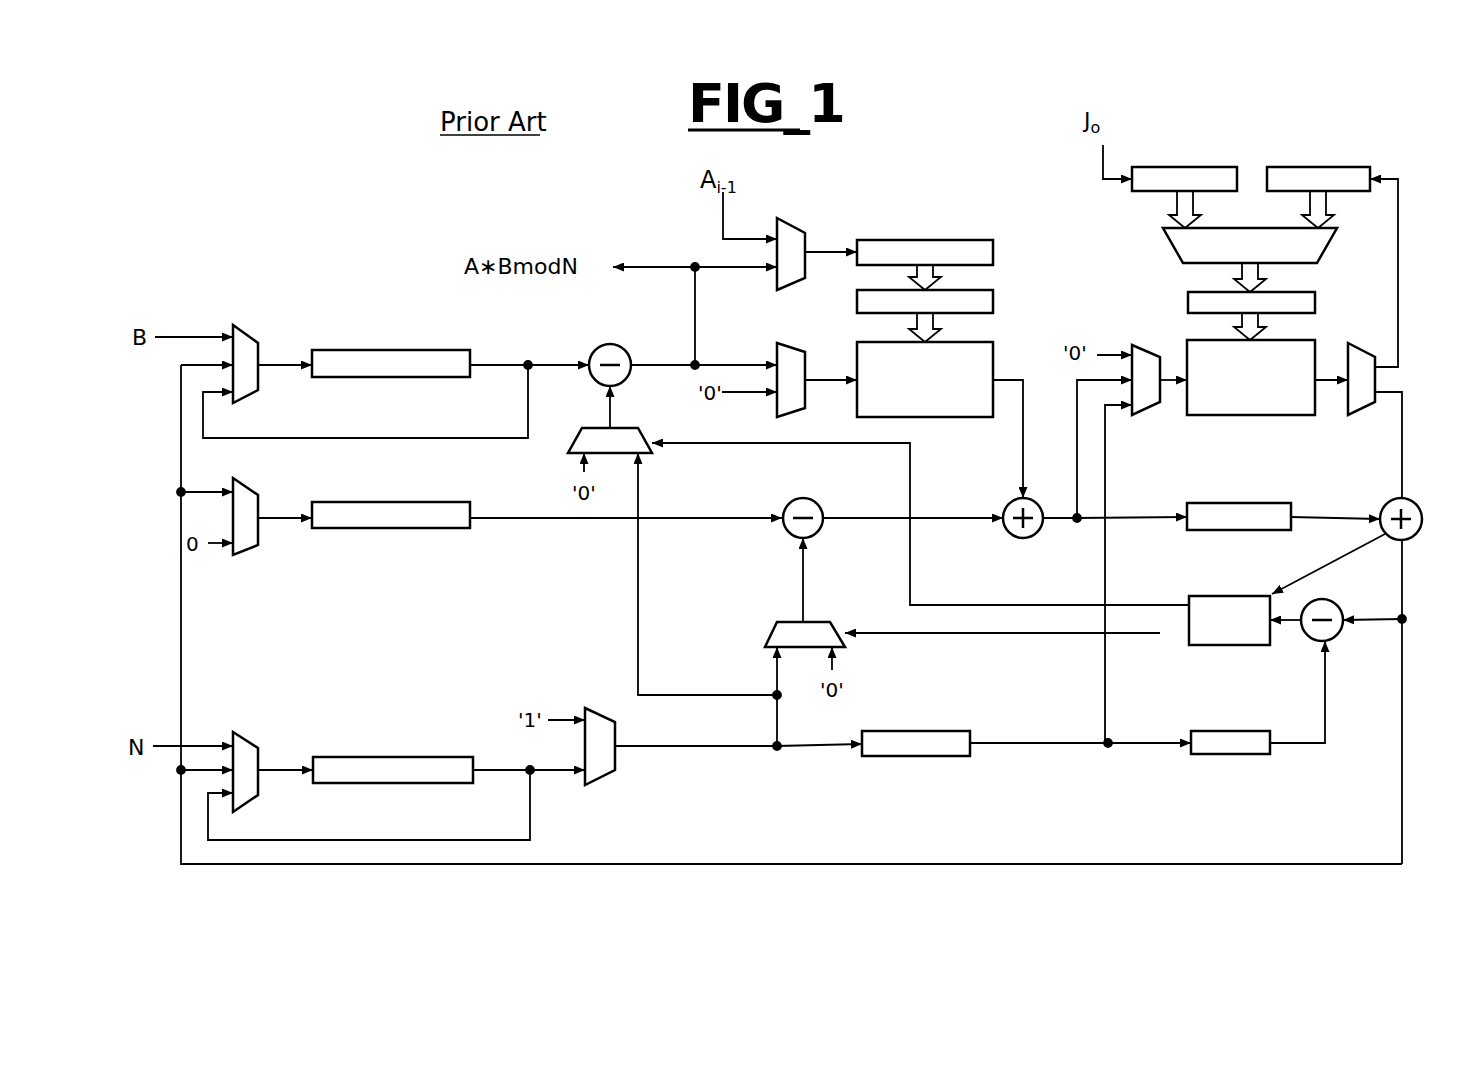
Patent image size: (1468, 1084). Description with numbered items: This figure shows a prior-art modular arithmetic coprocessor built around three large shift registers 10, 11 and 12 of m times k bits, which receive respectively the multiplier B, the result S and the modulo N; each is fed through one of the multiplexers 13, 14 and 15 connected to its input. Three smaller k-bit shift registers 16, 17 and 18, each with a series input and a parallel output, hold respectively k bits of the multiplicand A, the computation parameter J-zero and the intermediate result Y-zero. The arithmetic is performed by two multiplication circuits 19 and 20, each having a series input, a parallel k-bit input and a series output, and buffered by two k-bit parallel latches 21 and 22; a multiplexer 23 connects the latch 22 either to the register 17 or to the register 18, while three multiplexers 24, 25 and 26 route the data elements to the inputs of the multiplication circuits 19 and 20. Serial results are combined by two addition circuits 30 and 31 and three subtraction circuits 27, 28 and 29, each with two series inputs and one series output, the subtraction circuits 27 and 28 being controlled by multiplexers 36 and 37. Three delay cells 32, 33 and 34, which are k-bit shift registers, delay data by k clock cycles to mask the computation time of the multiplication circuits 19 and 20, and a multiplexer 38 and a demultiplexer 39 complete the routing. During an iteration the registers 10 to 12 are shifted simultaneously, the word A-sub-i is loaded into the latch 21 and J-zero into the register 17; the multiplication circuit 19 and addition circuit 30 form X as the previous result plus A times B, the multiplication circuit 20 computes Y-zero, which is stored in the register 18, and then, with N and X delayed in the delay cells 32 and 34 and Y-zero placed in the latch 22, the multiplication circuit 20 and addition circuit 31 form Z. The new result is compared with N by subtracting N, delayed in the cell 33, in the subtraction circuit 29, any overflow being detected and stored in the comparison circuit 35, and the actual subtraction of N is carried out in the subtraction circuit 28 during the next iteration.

The shift register 10 is at (382, 350).
The shift register 11 is at (384, 530).
The shift register 12 is at (397, 756).
The multiplexer 13 is at (246, 325).
The multiplexer 14 is at (252, 556).
The multiplexer 15 is at (252, 733).
The k-bit shift register 16 is at (994, 251).
The k-bit shift register 17 is at (1195, 167).
The k-bit shift register 18 is at (1318, 167).
The multiplication circuit 19 is at (957, 418).
The multiplication circuit 20 is at (1254, 416).
The k-bit parallel latch 21 is at (994, 301).
The k-bit parallel latch 22 is at (1316, 303).
The multiplexer 23 is at (1334, 245).
The multiplexer 24 is at (789, 218).
The multiplexer 25 is at (786, 343).
The multiplexer 26 is at (1140, 347).
The subtraction circuit 27 is at (610, 344).
The subtraction circuit 28 is at (810, 498).
The subtraction circuit 29 is at (1330, 600).
The addition circuit 30 is at (1012, 535).
The addition circuit 31 is at (1422, 522).
The delay cell 32 is at (917, 757).
The delay cell 33 is at (1232, 755).
The delay cell 34 is at (1212, 531).
The comparison circuit 35 is at (1224, 646).
The multiplexer 36 is at (570, 448).
The multiplexer 37 is at (825, 622).
The multiplexer 38 is at (606, 784).
The demultiplexer 39 is at (1362, 416).